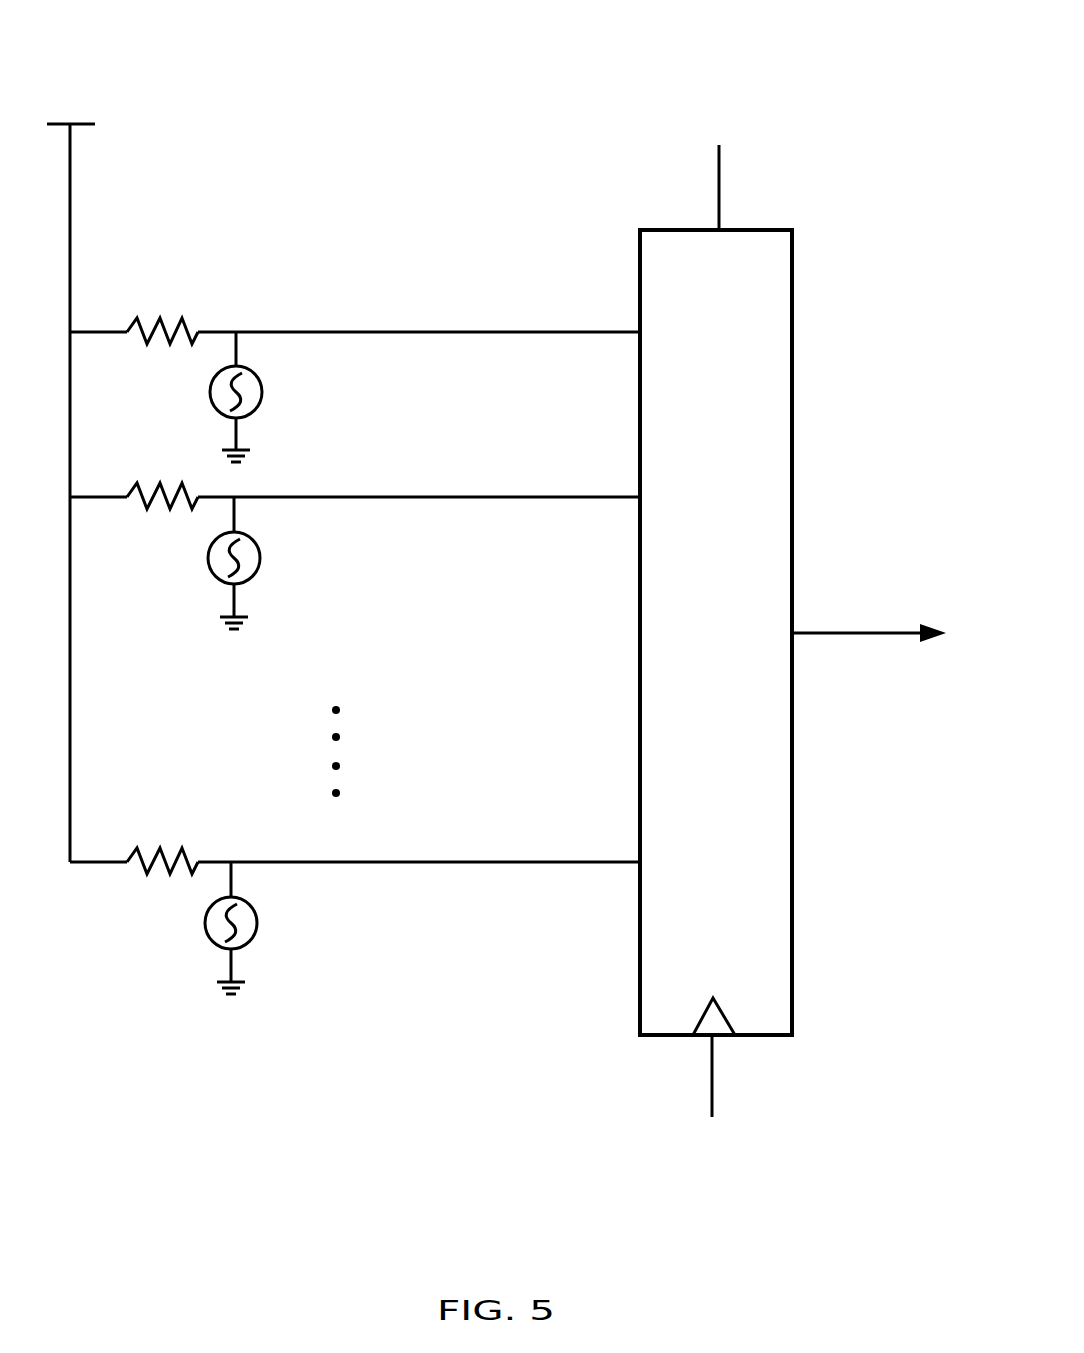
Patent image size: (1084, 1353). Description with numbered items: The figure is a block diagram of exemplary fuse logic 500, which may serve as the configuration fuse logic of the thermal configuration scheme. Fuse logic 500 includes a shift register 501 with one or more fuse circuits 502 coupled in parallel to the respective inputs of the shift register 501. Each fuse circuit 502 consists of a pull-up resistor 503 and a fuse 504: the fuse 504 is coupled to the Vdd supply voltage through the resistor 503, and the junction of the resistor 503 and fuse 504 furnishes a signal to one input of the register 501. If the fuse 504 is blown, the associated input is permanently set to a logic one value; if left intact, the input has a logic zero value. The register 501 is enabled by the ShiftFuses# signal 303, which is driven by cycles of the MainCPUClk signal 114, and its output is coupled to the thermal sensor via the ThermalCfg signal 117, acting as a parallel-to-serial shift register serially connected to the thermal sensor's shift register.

The fuse logic 500 is at (464, 33).
The fuse circuit 502 is at (308, 254).
The resistor 503 is at (163, 324).
The fuse 504 is at (263, 388).
The shift register 501 is at (739, 687).
The ShiftFuses# signal 303 is at (743, 128).
The ThermalCfg signal 117 is at (903, 616).
The MainCPUClk signal 114 is at (733, 1204).